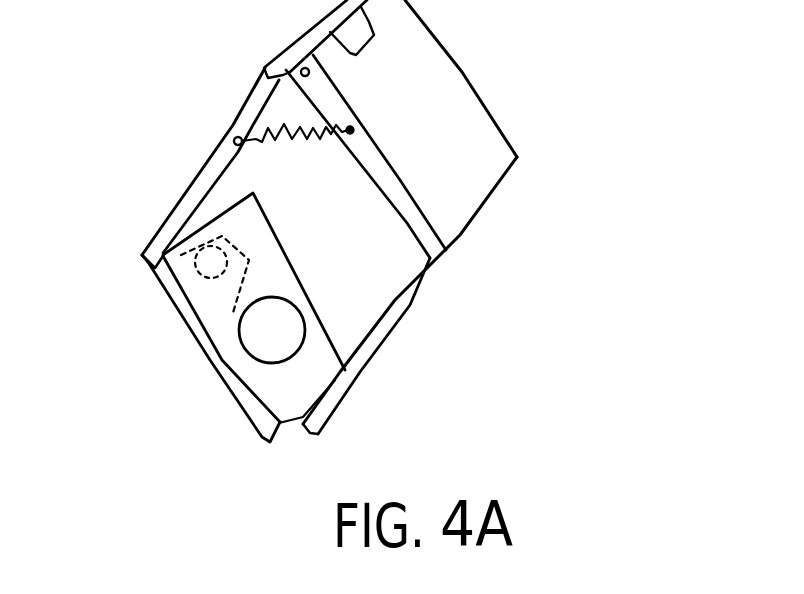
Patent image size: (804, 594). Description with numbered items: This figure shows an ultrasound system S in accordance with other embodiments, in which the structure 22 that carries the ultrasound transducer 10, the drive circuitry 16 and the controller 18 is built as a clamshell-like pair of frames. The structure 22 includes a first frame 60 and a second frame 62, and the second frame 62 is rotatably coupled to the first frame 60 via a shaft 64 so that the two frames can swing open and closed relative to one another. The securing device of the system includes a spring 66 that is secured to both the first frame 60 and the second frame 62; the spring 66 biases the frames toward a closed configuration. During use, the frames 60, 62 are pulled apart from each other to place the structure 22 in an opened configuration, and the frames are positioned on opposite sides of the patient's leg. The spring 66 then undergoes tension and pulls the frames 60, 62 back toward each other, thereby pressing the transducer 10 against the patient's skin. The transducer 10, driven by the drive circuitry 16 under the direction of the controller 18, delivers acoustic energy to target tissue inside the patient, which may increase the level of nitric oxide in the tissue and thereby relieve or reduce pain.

The sensor assembly S is at (629, 81).
The ultrasound transducer 10 is at (250, 356).
The drive circuitry 16 is at (190, 284).
The controller 18 is at (162, 272).
The structure 22 is at (490, 143).
The first frame 60 is at (457, 212).
The second frame 62 is at (205, 178).
The shaft 64 is at (297, 74).
The spring 66 is at (311, 97).